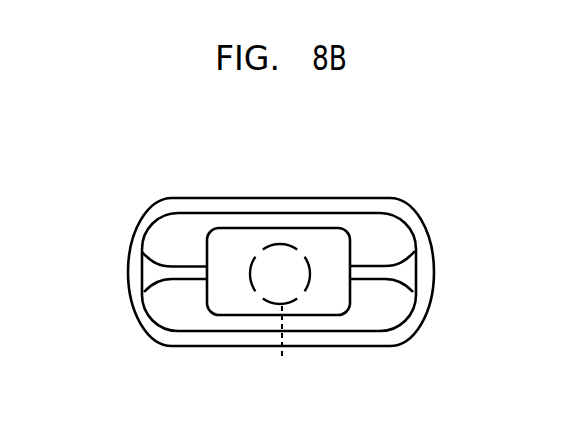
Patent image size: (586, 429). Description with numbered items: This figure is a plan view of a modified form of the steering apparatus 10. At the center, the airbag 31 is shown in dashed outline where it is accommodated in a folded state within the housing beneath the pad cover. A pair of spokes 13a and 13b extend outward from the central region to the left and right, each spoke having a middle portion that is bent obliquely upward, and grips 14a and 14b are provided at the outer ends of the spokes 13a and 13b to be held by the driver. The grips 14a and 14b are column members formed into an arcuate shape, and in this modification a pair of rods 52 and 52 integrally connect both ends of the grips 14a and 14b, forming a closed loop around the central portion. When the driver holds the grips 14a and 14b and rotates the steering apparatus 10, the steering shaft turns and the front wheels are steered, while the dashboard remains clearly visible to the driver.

The steering apparatus 10 is at (280, 262).
The rods 52 is at (203, 198).
The grip 14a is at (128, 255).
The grip 14b is at (434, 262).
The spoke 13a is at (170, 280).
The spoke 13b is at (390, 280).
The airbag 31 is at (280, 314).